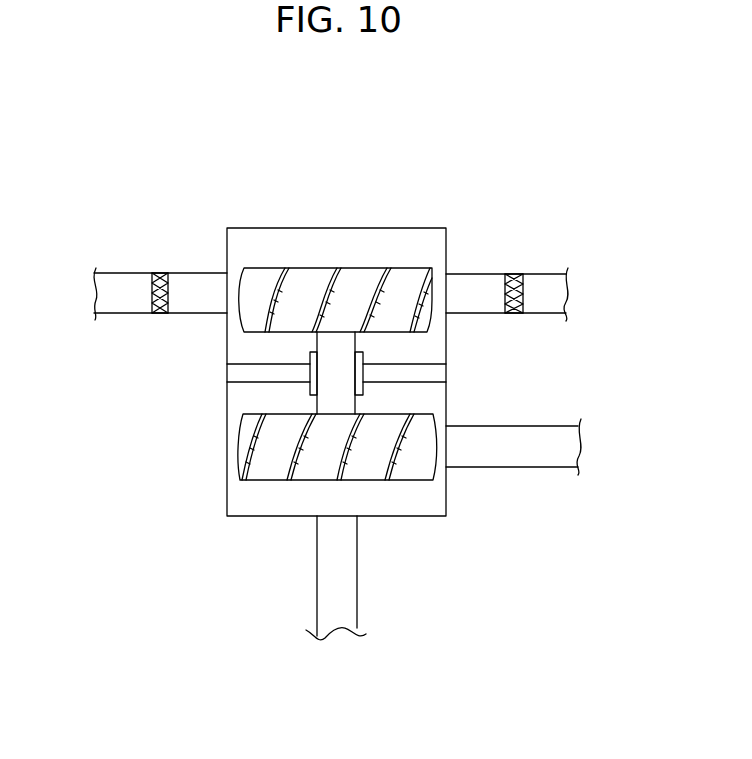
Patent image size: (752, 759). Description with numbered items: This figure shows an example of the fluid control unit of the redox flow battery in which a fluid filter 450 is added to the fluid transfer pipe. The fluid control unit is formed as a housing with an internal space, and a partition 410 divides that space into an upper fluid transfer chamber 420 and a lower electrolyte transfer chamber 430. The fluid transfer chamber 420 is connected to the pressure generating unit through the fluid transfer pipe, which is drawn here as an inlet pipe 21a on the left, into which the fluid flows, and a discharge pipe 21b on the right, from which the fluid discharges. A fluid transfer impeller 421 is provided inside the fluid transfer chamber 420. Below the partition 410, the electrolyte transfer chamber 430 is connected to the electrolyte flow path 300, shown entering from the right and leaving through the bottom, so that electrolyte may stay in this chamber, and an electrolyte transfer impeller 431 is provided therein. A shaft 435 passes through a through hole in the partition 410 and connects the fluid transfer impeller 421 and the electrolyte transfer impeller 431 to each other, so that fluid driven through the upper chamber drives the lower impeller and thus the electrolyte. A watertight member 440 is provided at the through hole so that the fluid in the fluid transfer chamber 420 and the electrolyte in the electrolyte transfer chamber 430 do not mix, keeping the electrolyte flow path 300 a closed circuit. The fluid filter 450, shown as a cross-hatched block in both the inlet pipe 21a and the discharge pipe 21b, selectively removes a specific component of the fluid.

The electrolyte flow path 300 is at (498, 452).
The inlet pipe 21a is at (197, 285).
The discharge pipe 21b is at (475, 287).
The partition 410 is at (415, 372).
The fluid transfer chamber 420 is at (343, 250).
The fluid transfer impeller 421 is at (262, 285).
The electrolyte transfer chamber 430 is at (423, 396).
The electrolyte transfer impeller 431 is at (250, 462).
The shaft 435 is at (333, 346).
The watertight member 440 is at (313, 388).
The fluid filter 450 is at (160, 273).